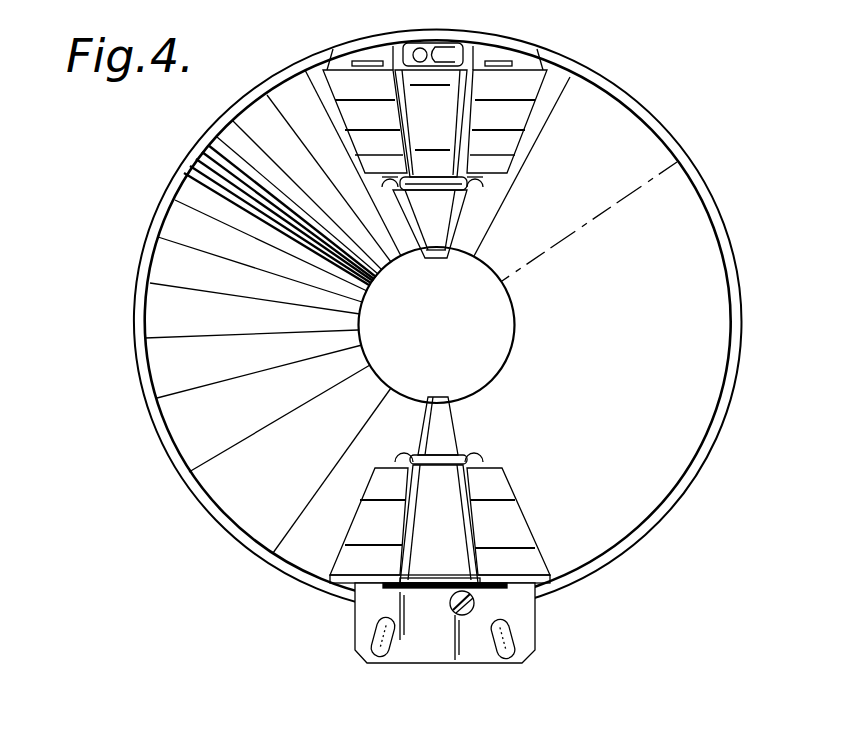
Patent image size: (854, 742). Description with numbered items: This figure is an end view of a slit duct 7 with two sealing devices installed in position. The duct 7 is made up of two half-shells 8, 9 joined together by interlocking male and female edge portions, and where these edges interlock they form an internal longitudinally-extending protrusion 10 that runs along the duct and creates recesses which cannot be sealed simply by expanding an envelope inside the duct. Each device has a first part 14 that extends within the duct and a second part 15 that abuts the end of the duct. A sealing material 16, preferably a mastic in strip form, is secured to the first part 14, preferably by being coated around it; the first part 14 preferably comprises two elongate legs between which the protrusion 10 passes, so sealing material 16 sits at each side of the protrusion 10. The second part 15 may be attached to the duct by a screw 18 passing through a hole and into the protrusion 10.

The slit duct 7 is at (168, 258).
The half-shell 8 is at (193, 144).
The half-shell 9 is at (643, 113).
The longitudinally-extending protrusion 10 is at (436, 258).
The first part 14 is at (400, 462).
The second part 15 is at (473, 648).
The sealing material 16 is at (342, 78).
The screw 18 is at (487, 606).